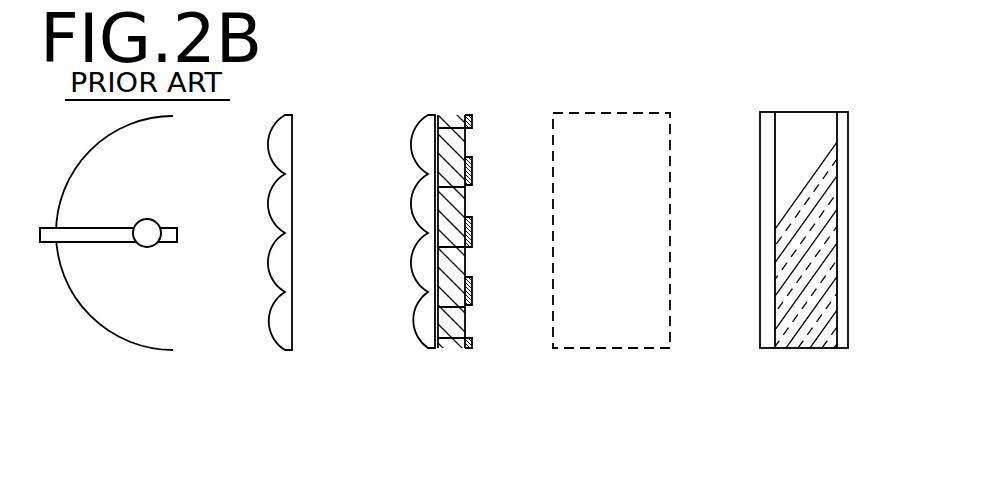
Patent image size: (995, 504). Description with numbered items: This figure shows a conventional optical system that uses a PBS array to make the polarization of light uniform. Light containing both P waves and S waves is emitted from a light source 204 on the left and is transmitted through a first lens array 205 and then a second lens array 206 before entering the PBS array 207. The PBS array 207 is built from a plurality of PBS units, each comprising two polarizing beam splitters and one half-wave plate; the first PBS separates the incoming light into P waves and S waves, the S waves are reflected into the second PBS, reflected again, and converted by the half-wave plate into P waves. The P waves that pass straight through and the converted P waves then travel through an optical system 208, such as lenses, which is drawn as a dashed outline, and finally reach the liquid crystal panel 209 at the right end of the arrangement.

The light source 204 is at (132, 322).
The first lens array 205 is at (280, 327).
The second lens array 206 is at (427, 332).
The PBS array 207 is at (457, 340).
The optical system 208 is at (627, 332).
The liquid crystal panel 209 is at (790, 343).